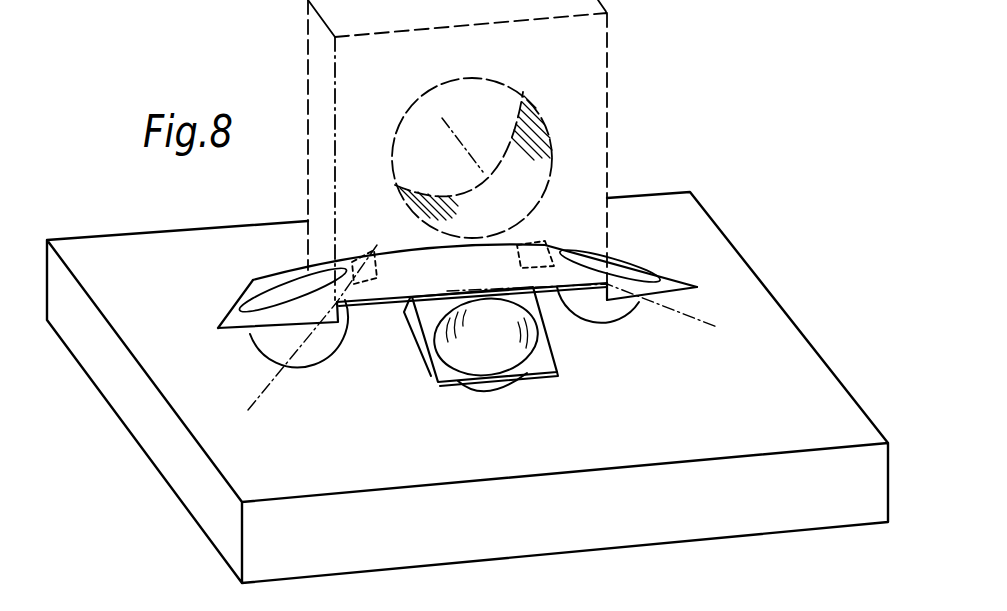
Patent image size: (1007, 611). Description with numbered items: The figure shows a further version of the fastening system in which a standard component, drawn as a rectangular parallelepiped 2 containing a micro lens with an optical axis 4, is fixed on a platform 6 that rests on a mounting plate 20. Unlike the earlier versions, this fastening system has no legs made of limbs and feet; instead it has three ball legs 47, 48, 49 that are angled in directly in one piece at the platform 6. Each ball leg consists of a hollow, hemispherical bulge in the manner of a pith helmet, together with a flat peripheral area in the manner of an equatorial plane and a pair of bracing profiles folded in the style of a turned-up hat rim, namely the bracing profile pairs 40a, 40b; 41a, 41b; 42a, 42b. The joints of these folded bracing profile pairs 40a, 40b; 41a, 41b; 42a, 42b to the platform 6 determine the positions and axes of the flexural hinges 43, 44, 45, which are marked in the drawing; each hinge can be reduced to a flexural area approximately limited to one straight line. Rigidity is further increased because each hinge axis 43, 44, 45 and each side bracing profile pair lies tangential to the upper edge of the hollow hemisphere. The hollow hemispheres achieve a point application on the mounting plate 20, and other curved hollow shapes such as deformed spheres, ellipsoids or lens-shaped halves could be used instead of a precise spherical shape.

The rectangular parallelepiped 2 is at (599, 72).
The optical axis 4 is at (459, 142).
The platform 6 is at (462, 283).
The mounting plate 20 is at (793, 337).
The bracing profile 40a is at (632, 300).
The bracing profile 40b is at (538, 253).
The bracing profile 41a is at (376, 248).
The bracing profile 41b is at (248, 331).
The bracing profile 42a is at (423, 358).
The bracing profile 42b is at (556, 356).
The flexural hinge 43 is at (697, 313).
The flexural hinge 44 is at (254, 399).
The flexural hinge 45 is at (407, 318).
The ball leg 47 is at (601, 329).
The ball leg 48 is at (301, 362).
The ball leg 49 is at (480, 397).